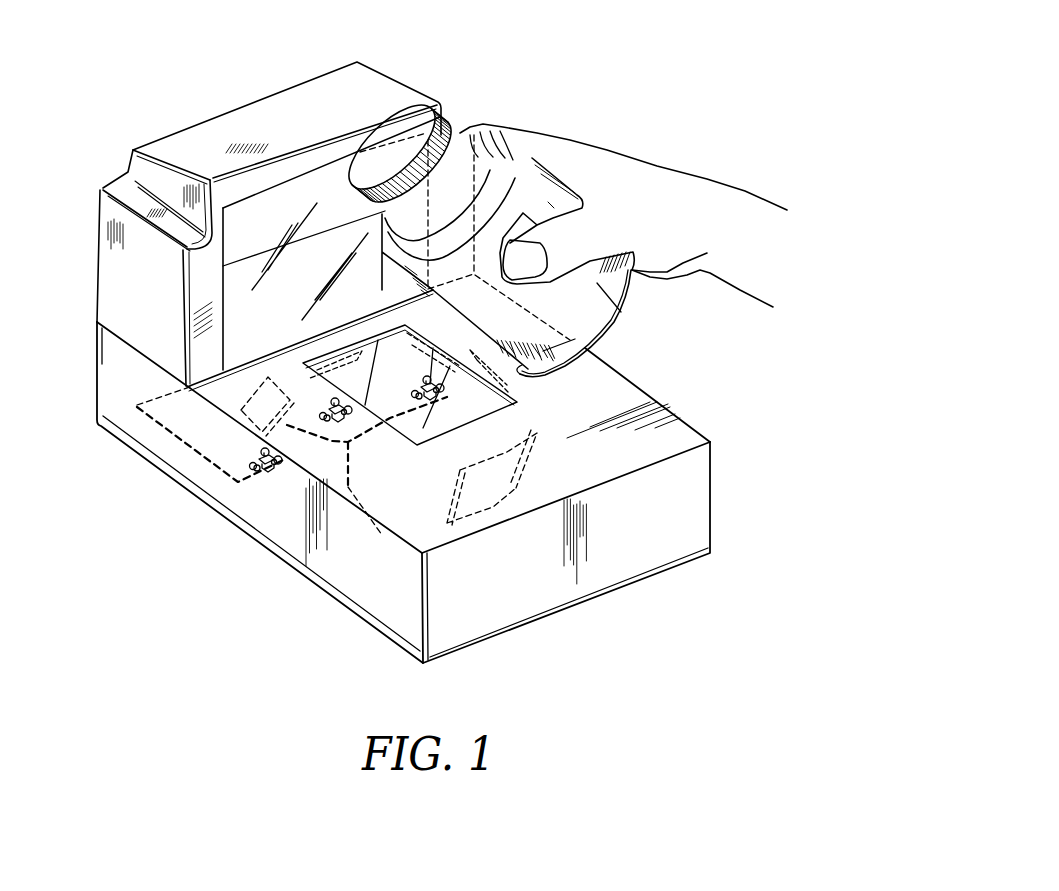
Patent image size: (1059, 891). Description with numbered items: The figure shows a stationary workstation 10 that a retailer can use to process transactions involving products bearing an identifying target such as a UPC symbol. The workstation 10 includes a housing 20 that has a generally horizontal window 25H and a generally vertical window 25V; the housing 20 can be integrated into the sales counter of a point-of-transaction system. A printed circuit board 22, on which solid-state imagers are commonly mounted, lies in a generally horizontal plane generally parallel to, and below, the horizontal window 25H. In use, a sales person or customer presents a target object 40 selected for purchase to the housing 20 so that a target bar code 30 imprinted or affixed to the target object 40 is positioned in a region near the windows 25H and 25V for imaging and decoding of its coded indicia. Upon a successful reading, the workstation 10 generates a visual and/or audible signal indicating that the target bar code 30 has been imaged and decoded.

The workstation 10 is at (170, 55).
The housing 20 is at (168, 148).
The printed circuit board 22 is at (188, 422).
The generally vertical window 25V is at (237, 283).
The generally horizontal window 25H is at (407, 427).
The target bar code 30 is at (551, 348).
The target object 40 is at (507, 177).